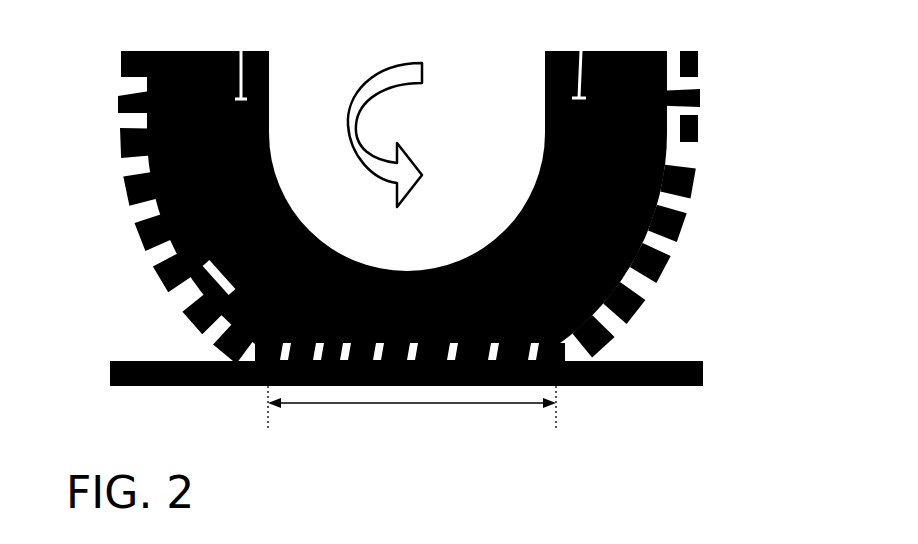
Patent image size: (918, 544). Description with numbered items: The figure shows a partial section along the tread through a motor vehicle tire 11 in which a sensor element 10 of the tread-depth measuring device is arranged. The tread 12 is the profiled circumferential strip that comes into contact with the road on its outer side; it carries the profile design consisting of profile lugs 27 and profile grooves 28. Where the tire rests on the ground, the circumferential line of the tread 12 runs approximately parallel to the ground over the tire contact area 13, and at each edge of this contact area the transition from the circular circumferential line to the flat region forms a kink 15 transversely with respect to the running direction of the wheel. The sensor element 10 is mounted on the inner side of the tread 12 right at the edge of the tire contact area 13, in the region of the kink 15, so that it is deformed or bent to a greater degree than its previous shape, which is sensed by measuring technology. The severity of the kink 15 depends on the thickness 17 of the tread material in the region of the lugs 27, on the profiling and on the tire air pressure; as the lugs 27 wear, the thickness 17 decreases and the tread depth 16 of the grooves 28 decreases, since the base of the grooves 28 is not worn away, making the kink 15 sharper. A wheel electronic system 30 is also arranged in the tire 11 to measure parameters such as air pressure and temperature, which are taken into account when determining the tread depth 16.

The sensor element 10 is at (218, 337).
The tire 11 is at (507, 178).
The tread 12 is at (128, 187).
The tire contact area 13 is at (408, 405).
The kink 15 is at (245, 332).
The tread depth 16 is at (612, 316).
The thickness 17 is at (611, 323).
The profile lugs 27 is at (686, 186).
The profile grooves 28 is at (656, 245).
The wheel electronic system 30 is at (190, 291).